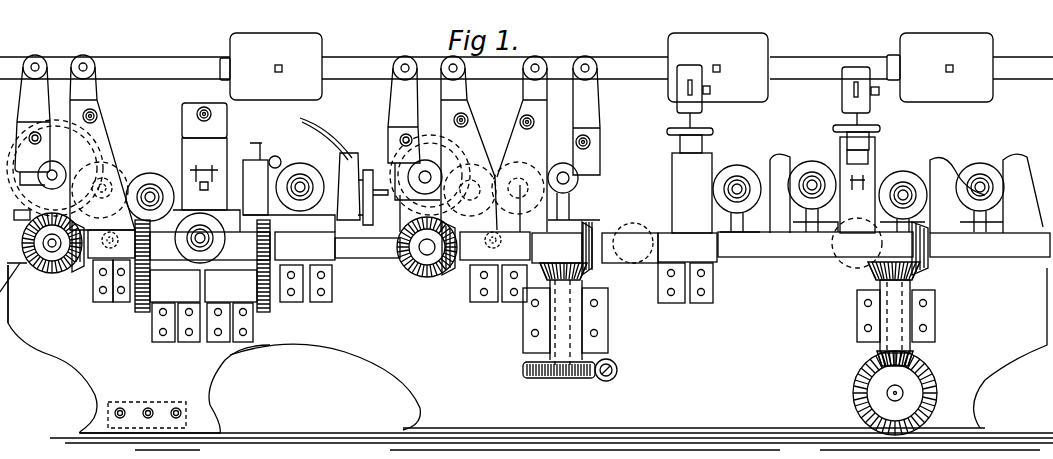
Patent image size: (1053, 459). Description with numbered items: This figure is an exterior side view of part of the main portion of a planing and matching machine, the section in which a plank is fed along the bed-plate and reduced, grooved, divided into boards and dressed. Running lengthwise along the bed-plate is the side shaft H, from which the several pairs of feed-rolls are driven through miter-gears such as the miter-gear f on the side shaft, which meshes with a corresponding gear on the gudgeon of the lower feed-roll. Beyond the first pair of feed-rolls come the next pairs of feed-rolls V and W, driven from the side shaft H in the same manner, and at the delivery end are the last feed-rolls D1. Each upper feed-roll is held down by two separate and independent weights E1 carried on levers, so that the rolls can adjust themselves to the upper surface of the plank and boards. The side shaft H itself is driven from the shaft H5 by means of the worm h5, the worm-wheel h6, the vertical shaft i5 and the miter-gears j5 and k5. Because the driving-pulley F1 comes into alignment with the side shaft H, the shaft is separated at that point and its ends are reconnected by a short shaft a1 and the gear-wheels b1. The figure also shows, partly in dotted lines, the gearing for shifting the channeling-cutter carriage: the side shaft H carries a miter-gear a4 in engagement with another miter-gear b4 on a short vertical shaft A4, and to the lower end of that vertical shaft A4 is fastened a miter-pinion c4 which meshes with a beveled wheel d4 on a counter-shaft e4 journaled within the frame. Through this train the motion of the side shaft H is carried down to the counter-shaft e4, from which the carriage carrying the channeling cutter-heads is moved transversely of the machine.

The last feed-rolls D1 is at (37, 280).
The feed-rolls V is at (366, 186).
The weights E1 is at (606, 67).
The feed-rolls W is at (418, 263).
The driving-pulley F1 is at (231, 286).
The miter-gear f is at (68, 264).
The gear-wheels b1 is at (273, 318).
The short shaft a1 is at (204, 303).
The vertical shaft i5 is at (515, 357).
The worm-wheel h6 is at (575, 379).
The shaft H5 is at (618, 358).
The worm h5 is at (618, 380).
The miter-gear k5 is at (610, 265).
The miter-gear j5 is at (604, 281).
The side shaft H is at (787, 263).
The miter-gear b4 is at (863, 280).
The miter-gear a4 is at (928, 273).
The miter-pinion c4 is at (917, 358).
The counter-shaft e4 is at (917, 390).
The vertical shaft A4 is at (857, 352).
The beveled wheel d4 is at (892, 393).